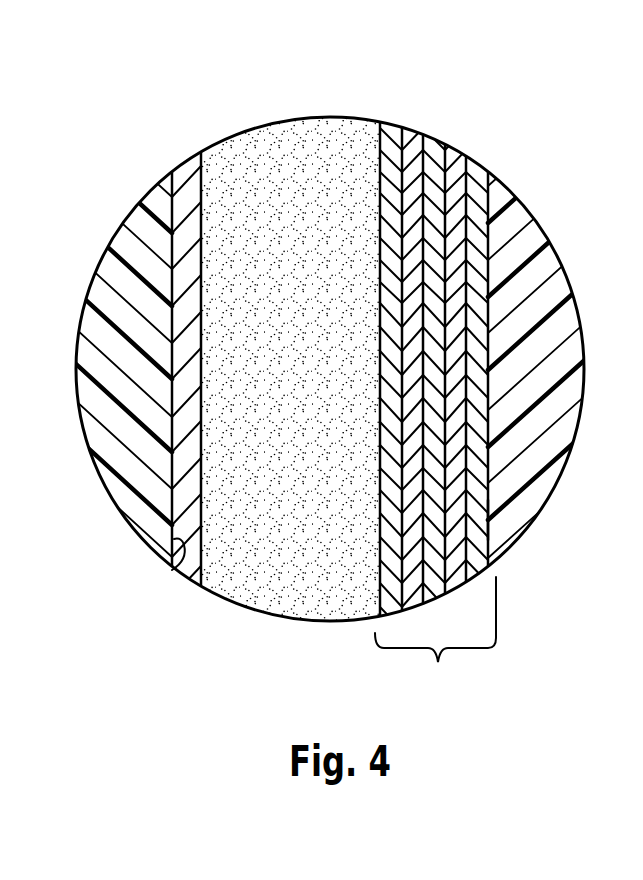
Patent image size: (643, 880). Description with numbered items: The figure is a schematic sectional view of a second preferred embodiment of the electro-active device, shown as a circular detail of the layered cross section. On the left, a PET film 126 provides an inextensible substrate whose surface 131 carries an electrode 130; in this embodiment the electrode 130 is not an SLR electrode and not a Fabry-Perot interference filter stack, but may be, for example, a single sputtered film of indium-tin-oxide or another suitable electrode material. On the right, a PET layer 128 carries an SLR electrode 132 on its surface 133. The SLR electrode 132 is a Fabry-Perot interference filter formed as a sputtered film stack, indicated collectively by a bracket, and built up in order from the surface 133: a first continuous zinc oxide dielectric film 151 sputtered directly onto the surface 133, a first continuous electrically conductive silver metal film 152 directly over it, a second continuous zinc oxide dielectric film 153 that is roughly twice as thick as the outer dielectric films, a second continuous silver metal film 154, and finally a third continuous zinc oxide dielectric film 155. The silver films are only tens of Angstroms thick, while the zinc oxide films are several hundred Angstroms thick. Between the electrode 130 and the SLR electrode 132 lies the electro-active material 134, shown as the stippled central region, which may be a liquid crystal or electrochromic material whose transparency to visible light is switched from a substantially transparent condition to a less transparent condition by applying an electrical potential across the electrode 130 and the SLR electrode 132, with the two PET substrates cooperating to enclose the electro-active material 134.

The PET film 126 is at (112, 268).
The PET layer 128 is at (553, 292).
The electrode 130 is at (188, 172).
The surface 131 is at (170, 571).
The SLR electrode 132 is at (435, 639).
The surface 133 is at (487, 530).
The electro-active material 134 is at (278, 140).
The first continuous zinc oxide dielectric film 151 is at (488, 180).
The first continuous electrically conductive silver metal film 152 is at (457, 167).
The second continuous zinc oxide dielectric film 153 is at (437, 153).
The second continuous silver metal film 154 is at (408, 142).
The third continuous zinc oxide dielectric film 155 is at (390, 130).